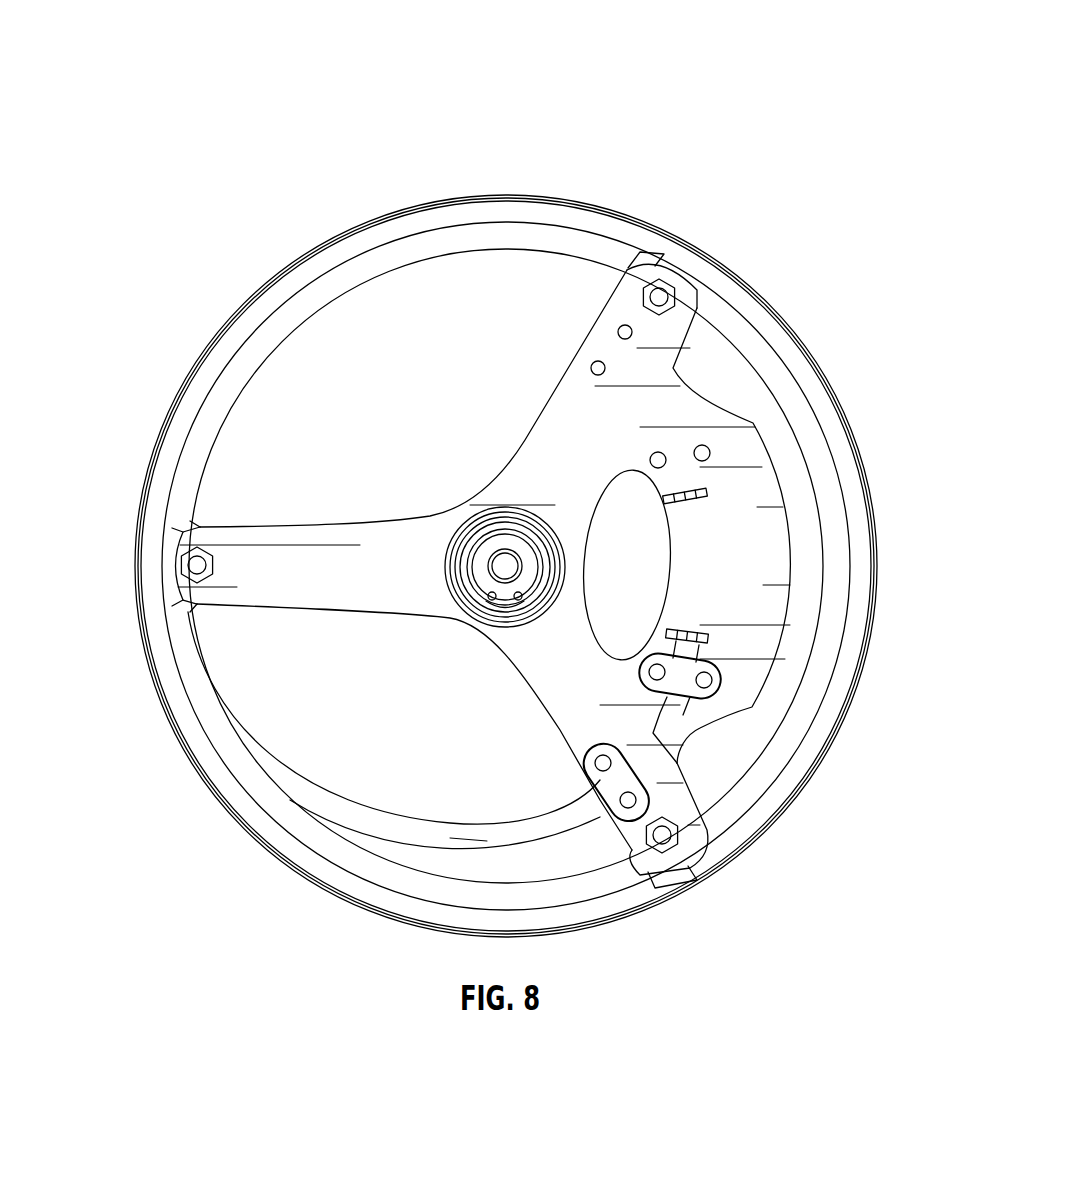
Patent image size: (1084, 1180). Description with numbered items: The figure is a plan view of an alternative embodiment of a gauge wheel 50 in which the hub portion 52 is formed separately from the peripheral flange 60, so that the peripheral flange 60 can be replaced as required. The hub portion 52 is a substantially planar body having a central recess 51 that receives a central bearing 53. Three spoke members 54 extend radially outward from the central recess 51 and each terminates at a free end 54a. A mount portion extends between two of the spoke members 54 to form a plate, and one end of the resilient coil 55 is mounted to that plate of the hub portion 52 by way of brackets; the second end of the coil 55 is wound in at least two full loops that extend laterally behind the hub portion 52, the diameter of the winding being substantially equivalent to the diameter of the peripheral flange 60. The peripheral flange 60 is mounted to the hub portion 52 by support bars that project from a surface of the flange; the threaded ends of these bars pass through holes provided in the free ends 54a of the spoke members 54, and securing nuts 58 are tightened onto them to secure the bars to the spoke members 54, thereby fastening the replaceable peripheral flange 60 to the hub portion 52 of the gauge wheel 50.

The gauge wheel 50 is at (833, 48).
The central recess 51 is at (481, 613).
The hub portion 52 is at (388, 490).
The central bearing 53 is at (514, 565).
The spoke members 54 is at (567, 410).
The free end 54a is at (688, 297).
The resilient coil 55 is at (861, 568).
The securing nuts 58 is at (660, 852).
The peripheral flange 60 is at (866, 470).